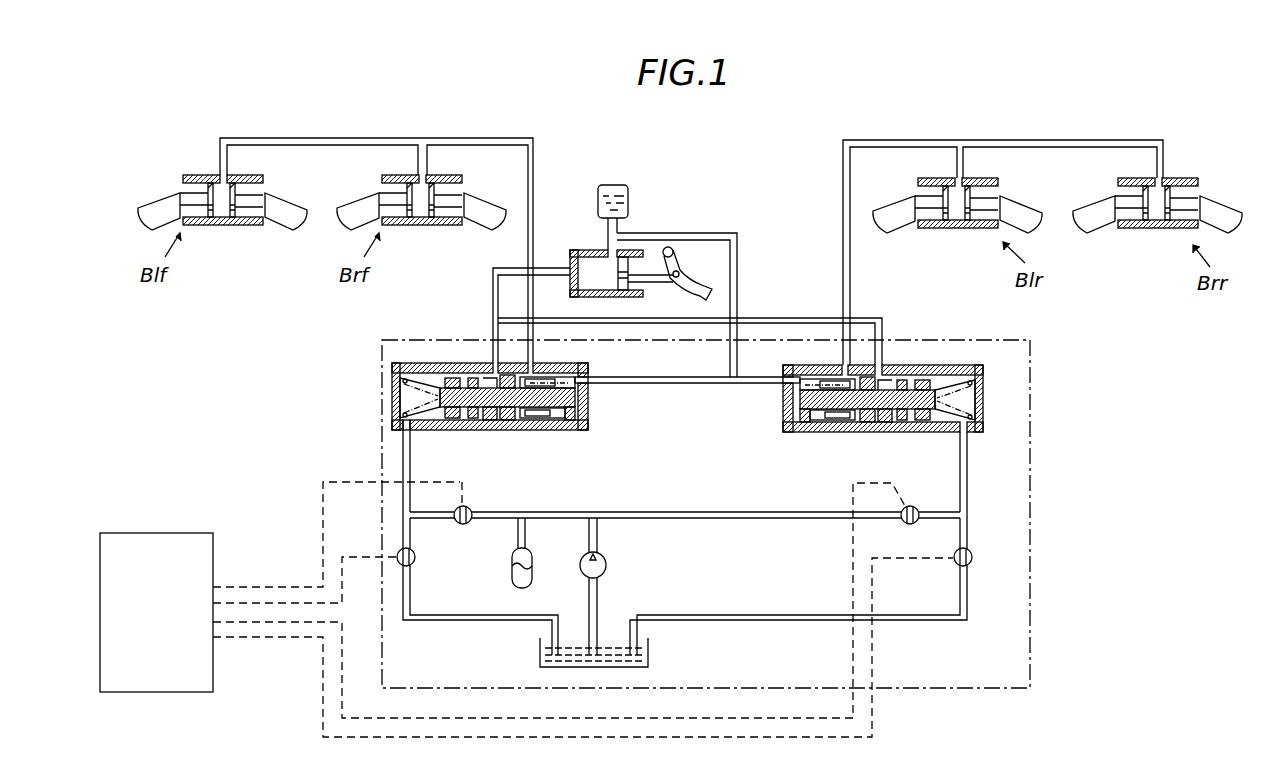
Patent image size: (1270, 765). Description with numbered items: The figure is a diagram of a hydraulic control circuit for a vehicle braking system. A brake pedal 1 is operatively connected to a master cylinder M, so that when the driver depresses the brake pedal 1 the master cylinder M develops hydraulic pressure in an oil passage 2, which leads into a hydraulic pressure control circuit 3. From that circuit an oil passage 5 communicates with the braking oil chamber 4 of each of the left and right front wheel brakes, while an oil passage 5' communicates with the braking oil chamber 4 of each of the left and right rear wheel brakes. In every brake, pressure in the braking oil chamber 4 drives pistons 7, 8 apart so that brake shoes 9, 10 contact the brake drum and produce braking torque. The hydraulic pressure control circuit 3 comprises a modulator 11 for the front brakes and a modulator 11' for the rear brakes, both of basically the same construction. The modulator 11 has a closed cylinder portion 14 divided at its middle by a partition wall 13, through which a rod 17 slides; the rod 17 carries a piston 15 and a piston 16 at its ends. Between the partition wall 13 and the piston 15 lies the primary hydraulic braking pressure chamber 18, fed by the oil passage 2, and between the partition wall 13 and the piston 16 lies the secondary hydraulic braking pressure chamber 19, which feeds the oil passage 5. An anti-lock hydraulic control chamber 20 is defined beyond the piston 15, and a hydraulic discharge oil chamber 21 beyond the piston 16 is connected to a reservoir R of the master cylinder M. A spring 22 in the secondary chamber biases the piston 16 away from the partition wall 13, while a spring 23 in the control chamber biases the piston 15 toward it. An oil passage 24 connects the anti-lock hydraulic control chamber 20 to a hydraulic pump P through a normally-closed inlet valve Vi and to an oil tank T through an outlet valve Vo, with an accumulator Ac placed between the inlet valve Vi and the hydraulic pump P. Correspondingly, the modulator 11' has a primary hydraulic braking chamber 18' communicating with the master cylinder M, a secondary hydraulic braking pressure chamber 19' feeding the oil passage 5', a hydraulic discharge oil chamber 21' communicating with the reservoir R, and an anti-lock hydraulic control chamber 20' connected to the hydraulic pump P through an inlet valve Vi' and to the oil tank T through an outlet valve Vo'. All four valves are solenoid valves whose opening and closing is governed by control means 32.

The brake pedal 1 is at (708, 290).
The oil passage 2 is at (548, 268).
The hydraulic pressure control circuit 3 is at (382, 445).
The braking oil chamber 4 is at (1160, 220).
The oil passage 5 is at (376, 236).
The oil passage 5' is at (1003, 237).
The piston 7 is at (1140, 184).
The piston 8 is at (1179, 184).
The brake shoe 9 is at (1092, 205).
The brake shoe 10 is at (1223, 205).
The modulator 11 is at (514, 402).
The modulator 11' is at (877, 404).
The partition wall 13 is at (506, 378).
The cylinder portion 14 is at (428, 422).
The piston 15 is at (466, 420).
The piston 16 is at (569, 420).
The rod 17 is at (517, 420).
The primary hydraulic braking pressure chamber 18 is at (495, 420).
The primary hydraulic braking chamber 18' is at (889, 422).
The secondary hydraulic braking pressure chamber 19 is at (532, 434).
The secondary hydraulic braking pressure chamber 19' is at (842, 436).
The anti-lock hydraulic control chamber 20 is at (420, 380).
The anti-lock hydraulic control chamber 20' is at (978, 400).
The hydraulic discharge oil chamber 21 is at (597, 392).
The hydraulic discharge oil chamber 21' is at (799, 363).
The spring 22 is at (550, 377).
The spring 23 is at (446, 380).
The oil passage 24 is at (410, 499).
The control means 32 is at (526, 609).
The master cylinder M is at (583, 247).
The reservoir R is at (629, 204).
The hydraulic pump P is at (606, 567).
The oil tank T is at (650, 655).
The accumulator Ac is at (512, 578).
The inlet valve Vi is at (473, 500).
The inlet valve Vi' is at (923, 500).
The outlet valve Vo is at (423, 558).
The outlet valve Vo' is at (984, 558).